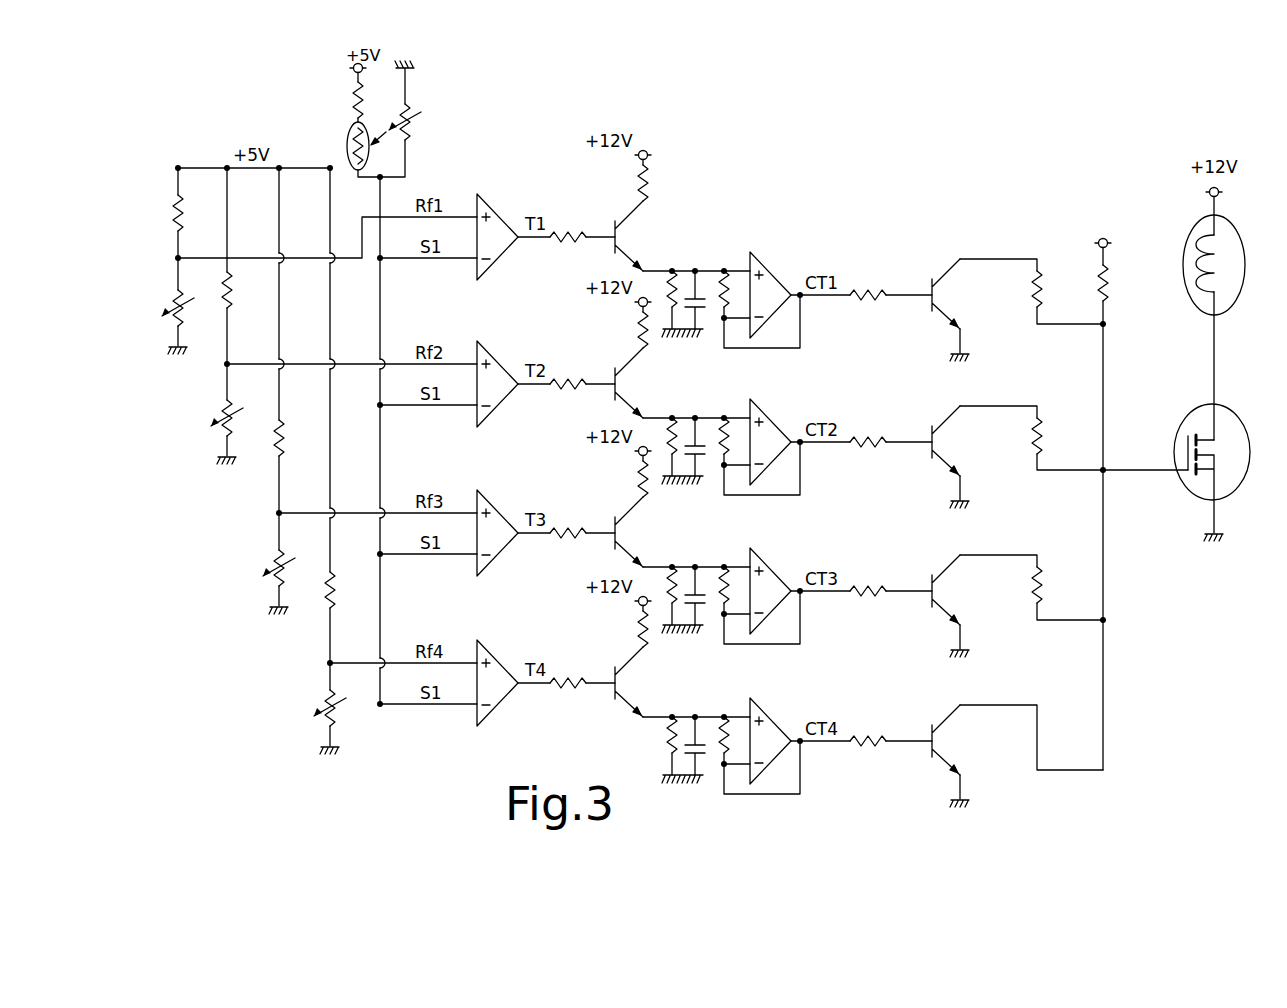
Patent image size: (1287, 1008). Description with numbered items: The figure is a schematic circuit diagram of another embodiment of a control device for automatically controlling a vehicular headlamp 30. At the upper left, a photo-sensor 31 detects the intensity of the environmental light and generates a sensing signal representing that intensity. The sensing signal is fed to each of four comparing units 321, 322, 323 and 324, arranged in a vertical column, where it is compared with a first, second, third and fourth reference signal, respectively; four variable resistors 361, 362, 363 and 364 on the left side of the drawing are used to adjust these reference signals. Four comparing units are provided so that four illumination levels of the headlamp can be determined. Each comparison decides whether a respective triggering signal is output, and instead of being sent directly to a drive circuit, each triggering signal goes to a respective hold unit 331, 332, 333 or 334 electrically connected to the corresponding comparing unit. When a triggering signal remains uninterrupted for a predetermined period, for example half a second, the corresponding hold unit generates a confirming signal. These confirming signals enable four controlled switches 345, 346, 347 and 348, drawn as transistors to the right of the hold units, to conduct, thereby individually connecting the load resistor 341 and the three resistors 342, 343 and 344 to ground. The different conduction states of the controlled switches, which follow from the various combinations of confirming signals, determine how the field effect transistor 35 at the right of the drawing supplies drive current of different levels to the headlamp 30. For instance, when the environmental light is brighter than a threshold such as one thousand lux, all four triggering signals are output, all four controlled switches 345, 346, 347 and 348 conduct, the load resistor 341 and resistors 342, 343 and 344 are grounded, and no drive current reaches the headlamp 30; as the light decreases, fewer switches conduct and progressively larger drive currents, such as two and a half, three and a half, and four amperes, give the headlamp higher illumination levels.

The headlamp 30 is at (1257, 282).
The photo-sensor 31 is at (421, 103).
The field effect transistor 35 is at (1246, 427).
The comparing unit 321 is at (483, 200).
The comparing unit 322 is at (483, 347).
The comparing unit 323 is at (483, 496).
The comparing unit 324 is at (483, 646).
The hold unit 331 is at (645, 259).
The hold unit 332 is at (645, 406).
The hold unit 333 is at (645, 555).
The hold unit 334 is at (645, 705).
The load resistor 341 is at (1121, 276).
The resistor 342 is at (1043, 272).
The resistor 343 is at (1043, 419).
The resistor 344 is at (1043, 568).
The controlled switch 345 is at (935, 273).
The controlled switch 346 is at (935, 420).
The controlled switch 347 is at (935, 569).
The controlled switch 348 is at (935, 719).
The variable resistor 361 is at (163, 316).
The variable resistor 362 is at (210, 427).
The variable resistor 363 is at (265, 578).
The variable resistor 364 is at (315, 717).